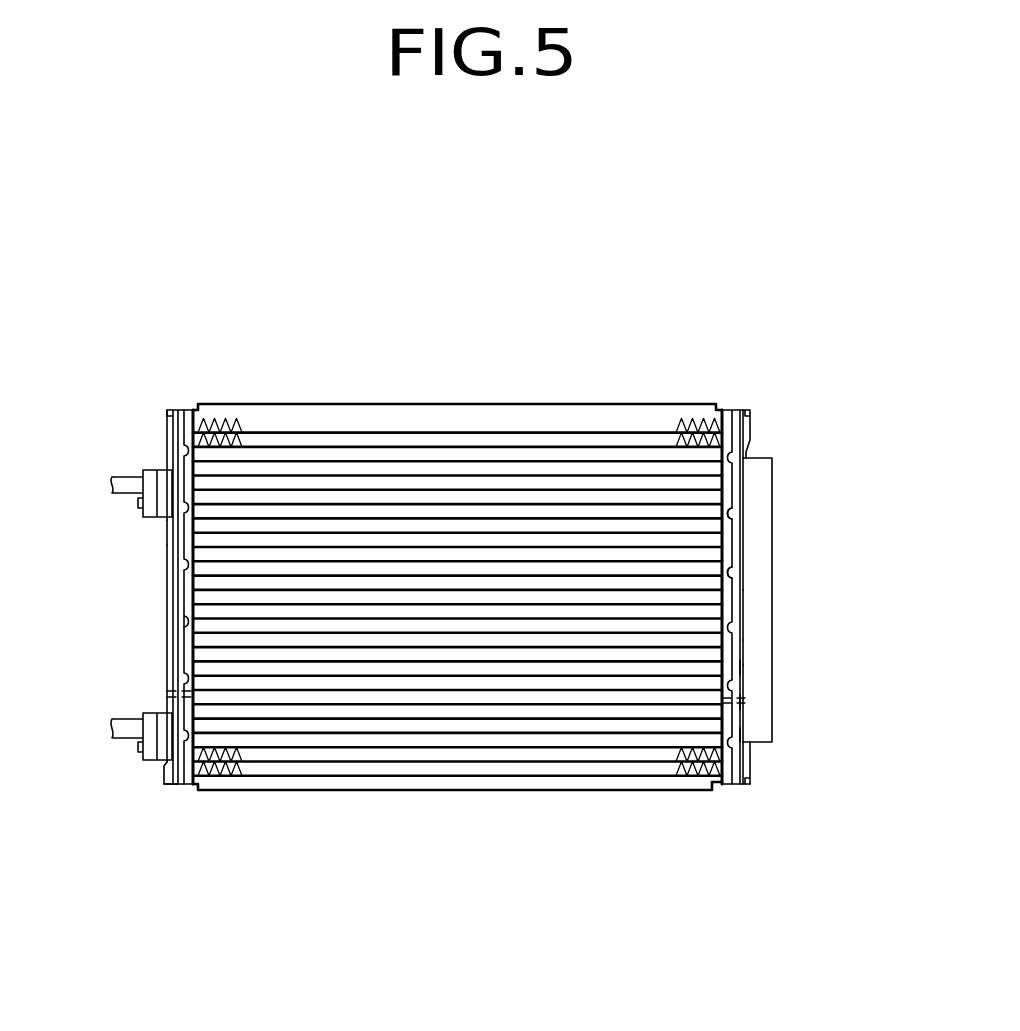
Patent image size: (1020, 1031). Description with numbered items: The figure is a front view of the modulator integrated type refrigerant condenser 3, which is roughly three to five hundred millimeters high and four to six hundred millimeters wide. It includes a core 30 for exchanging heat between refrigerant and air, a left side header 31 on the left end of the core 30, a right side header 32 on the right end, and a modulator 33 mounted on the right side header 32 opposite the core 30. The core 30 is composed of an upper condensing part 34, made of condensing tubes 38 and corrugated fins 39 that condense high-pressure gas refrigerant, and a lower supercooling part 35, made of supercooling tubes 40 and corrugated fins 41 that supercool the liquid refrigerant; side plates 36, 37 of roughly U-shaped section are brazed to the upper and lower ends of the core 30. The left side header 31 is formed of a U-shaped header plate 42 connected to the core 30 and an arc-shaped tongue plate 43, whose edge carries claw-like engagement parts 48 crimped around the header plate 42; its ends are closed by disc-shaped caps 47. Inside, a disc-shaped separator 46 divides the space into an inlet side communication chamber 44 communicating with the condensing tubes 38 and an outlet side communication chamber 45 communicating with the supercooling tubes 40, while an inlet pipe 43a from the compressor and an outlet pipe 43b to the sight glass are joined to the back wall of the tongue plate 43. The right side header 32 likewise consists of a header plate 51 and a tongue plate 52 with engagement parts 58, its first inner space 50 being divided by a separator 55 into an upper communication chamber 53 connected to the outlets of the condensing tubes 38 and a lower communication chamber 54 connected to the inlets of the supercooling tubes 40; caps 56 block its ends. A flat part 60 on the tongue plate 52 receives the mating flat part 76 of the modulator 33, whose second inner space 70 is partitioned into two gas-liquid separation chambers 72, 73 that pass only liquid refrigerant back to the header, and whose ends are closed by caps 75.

The modulator integrated type refrigerant condenser 3 is at (233, 395).
The core 30 is at (313, 392).
The left side header 31 is at (160, 415).
The right side header 32 is at (760, 388).
The modulator 33 is at (780, 487).
The condensing part 34 is at (430, 442).
The supercooling part 35 is at (517, 763).
The side plate 36 is at (367, 413).
The side plate 37 is at (453, 790).
The condensing tube 38 is at (500, 462).
The corrugated fin 39 is at (676, 434).
The supercooling tube 40 is at (392, 749).
The corrugated fin 41 is at (238, 767).
The header plate 42 is at (188, 587).
The tongue plate 43 is at (168, 557).
The inlet pipe 43a is at (125, 480).
The outlet pipe 43b is at (125, 732).
The inlet side communication chamber 44 is at (166, 534).
The outlet side communication chamber 45 is at (160, 776).
The separator 46 is at (168, 692).
The cap 47 is at (180, 786).
The engagement part 48 is at (186, 624).
The first inner space 50 is at (857, 678).
The header plate 51 is at (728, 755).
The tongue plate 52 is at (747, 778).
The upper communication chamber 53 is at (742, 668).
The lower communication chamber 54 is at (742, 700).
The separator 55 is at (745, 733).
The cap 56 is at (729, 412).
The engagement part 58 is at (733, 513).
The flat part 60 is at (736, 550).
The second inner space 70 is at (857, 593).
The gas-liquid separation chamber 72 is at (757, 598).
The gas-liquid separation chamber 73 is at (757, 640).
The cap 75 is at (758, 452).
The flat part 76 is at (741, 562).